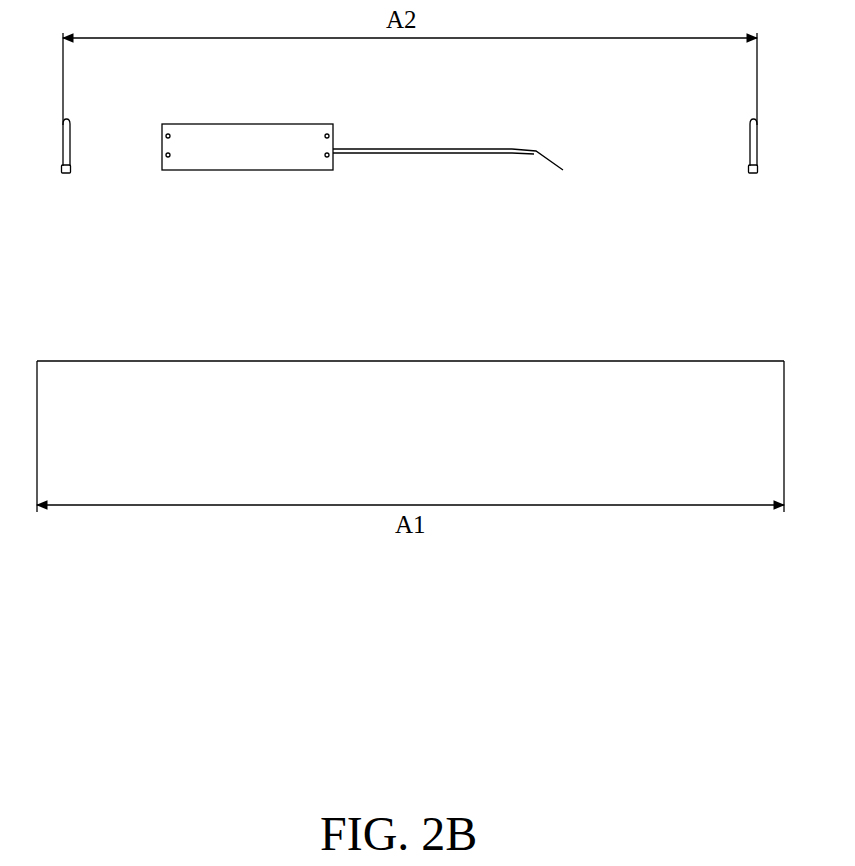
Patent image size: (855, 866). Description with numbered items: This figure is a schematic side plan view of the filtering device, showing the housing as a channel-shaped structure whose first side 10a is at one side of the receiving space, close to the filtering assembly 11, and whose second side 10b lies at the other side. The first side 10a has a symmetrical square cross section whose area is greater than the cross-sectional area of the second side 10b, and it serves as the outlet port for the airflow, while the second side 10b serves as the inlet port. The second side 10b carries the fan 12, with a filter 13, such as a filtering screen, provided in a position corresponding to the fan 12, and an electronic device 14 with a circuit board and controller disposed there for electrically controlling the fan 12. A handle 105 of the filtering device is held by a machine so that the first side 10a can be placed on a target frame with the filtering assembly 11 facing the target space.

The first side 10a is at (692, 366).
The second side 10b is at (595, 166).
The filtering assembly 11 is at (535, 393).
The fan 12 is at (400, 149).
The filter 13 is at (466, 149).
The electronic device 14 is at (249, 128).
The handle 105 is at (69, 128).